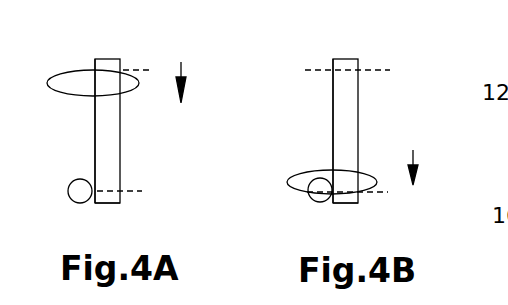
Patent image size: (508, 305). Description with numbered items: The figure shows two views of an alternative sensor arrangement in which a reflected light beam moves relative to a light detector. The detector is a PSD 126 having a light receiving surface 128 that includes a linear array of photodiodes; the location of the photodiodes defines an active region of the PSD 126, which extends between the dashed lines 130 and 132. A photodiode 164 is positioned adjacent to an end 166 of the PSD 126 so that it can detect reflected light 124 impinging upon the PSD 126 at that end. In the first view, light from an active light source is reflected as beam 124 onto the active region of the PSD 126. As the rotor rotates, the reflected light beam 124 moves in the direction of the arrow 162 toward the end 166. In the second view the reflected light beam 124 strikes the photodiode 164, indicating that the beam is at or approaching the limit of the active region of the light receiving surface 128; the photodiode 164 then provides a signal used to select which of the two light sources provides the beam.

In FIG. 4A, the reflected light beam 124 is at (128, 92).
In FIG. 4B, the reflected light beam 124 is at (367, 173).
In FIG. 4A, the PSD 126 is at (95, 148).
In FIG. 4B, the PSD 126 is at (333, 100).
In FIG. 4A, the light receiving surface 128 is at (108, 164).
In FIG. 4B, the light receiving surface 128 is at (343, 123).
In FIG. 4A, the dashed line 130 is at (150, 70).
In FIG. 4B, the dashed line 130 is at (378, 70).
In FIG. 4A, the dashed line 132 is at (142, 191).
In FIG. 4B, the dashed line 132 is at (377, 192).
In FIG. 4A, the arrow 162 is at (185, 68).
In FIG. 4B, the arrow 162 is at (417, 155).
In FIG. 4A, the photodiode 164 is at (70, 182).
In FIG. 4B, the photodiode 164 is at (313, 205).
In FIG. 4A, the end 166 is at (105, 203).
In FIG. 4B, the end 166 is at (345, 203).